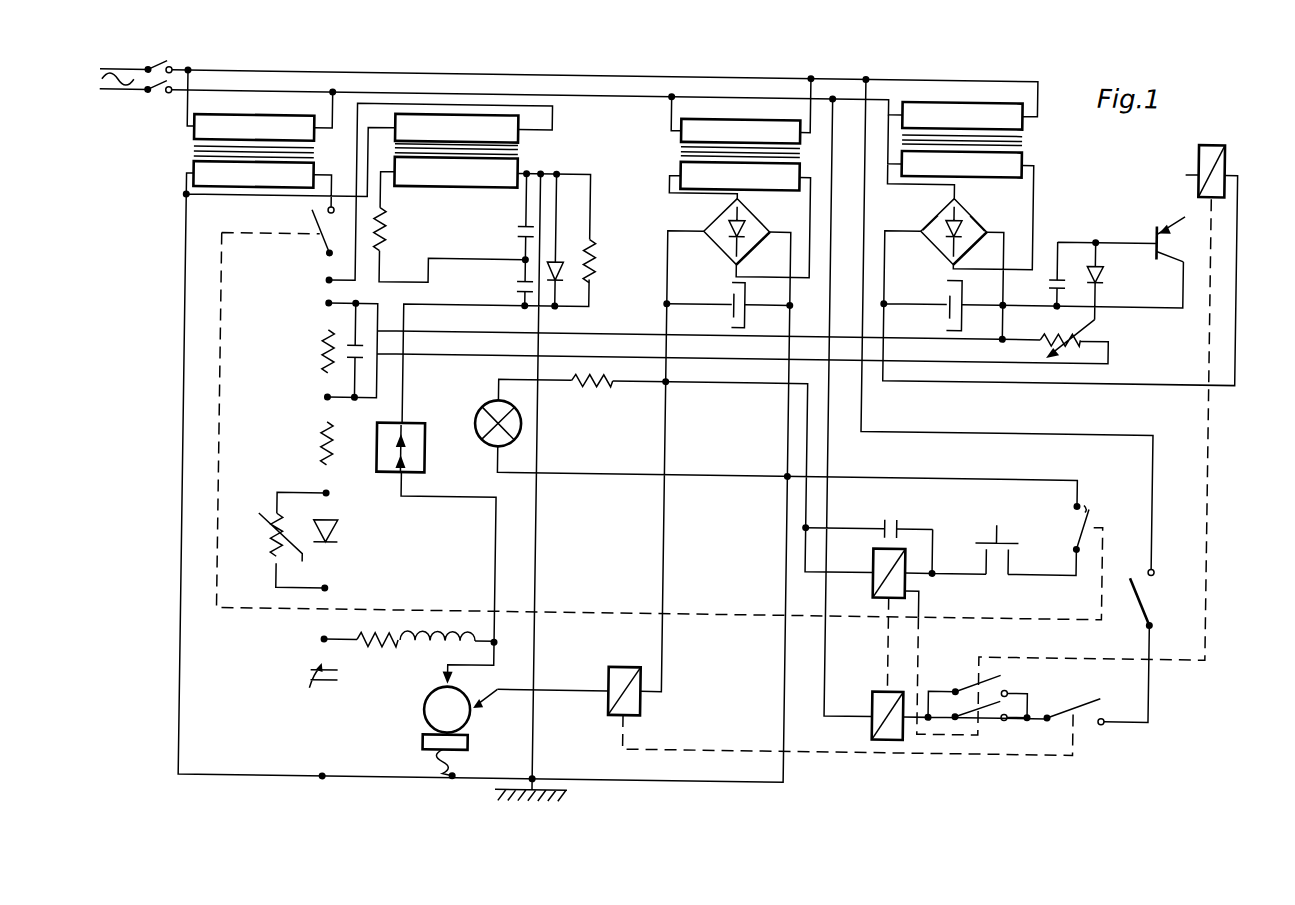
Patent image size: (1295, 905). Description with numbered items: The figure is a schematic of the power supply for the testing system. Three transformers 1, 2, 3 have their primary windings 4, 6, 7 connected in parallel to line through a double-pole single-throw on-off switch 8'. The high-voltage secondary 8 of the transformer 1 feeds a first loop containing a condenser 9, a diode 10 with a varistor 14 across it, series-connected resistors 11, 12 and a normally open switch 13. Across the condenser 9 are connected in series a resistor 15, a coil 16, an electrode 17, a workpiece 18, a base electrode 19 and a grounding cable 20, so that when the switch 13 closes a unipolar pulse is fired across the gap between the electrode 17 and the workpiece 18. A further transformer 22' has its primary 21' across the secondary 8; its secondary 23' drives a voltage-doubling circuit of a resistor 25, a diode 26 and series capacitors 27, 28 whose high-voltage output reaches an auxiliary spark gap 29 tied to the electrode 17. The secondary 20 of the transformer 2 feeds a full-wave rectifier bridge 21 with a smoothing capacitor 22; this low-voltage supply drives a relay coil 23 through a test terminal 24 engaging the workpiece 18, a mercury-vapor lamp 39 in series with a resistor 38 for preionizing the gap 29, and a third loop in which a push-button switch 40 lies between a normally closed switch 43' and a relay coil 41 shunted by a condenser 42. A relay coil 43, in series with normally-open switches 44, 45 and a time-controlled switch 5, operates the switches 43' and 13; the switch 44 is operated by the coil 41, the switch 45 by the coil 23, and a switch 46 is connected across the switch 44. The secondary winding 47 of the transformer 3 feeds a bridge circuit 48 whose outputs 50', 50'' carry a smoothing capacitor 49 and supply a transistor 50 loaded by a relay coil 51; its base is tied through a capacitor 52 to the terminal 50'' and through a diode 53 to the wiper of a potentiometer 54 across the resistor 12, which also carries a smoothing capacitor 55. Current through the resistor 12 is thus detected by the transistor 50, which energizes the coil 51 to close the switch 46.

The transformer 1 is at (186, 145).
The transformer 2 is at (679, 144).
The transformer 3 is at (1029, 128).
The primary winding 4 is at (254, 128).
The time-controlled switch 5 is at (1154, 595).
The primary winding 6 is at (740, 132).
The primary winding 7 is at (962, 116).
The high-voltage secondary 8 is at (253, 175).
The double-pole single-throw on-off switch 8' is at (143, 91).
The condenser 9 is at (313, 687).
The diode 10 is at (338, 531).
The resistor 11 is at (321, 446).
The resistor 12 is at (320, 349).
The normally open switch 13 is at (309, 242).
The varistor 14 is at (276, 542).
The resistor 15 is at (374, 633).
The coil 16 is at (420, 651).
The electrode 17 is at (468, 666).
The workpiece 18 is at (438, 704).
The base or contact electrode 19 is at (430, 739).
The grounding cable 20 is at (438, 758).
The full-wave rectifier bridge 21 is at (752, 228).
The primary 21' is at (456, 128).
The smoothing capacitor 22 is at (715, 310).
The transformer 22' is at (498, 139).
The relay coil 23 is at (623, 673).
The secondary 23' is at (455, 172).
The test terminal 24 is at (388, 237).
The resistor 25 is at (599, 252).
The diode 26 is at (559, 254).
The capacitor 27 is at (518, 228).
The capacitor 28 is at (518, 284).
The auxiliary spark gap 29 is at (431, 455).
The resistor 38 is at (592, 398).
The mercury-vapor lamp 39 is at (487, 406).
The momentary-contact push-button switch 40 is at (997, 533).
The relay coil 41 is at (884, 587).
The condenser 42 is at (896, 518).
The relay coil 43 is at (867, 719).
The normally closed switch 43' is at (1108, 517).
The normally-open switch 44 is at (985, 727).
The normally-open switch 45 is at (1076, 699).
The normally open switch 46 is at (985, 675).
The secondary winding 47 is at (962, 164).
The bridge circuit 48 is at (961, 202).
The smoothing capacitor 49 is at (947, 288).
The transistor 50 is at (1143, 234).
The output terminal 50' is at (917, 212).
The output terminal 50'' is at (1002, 213).
The relay coil 51 is at (1214, 131).
The capacitor 52 is at (1058, 264).
The diode 53 is at (1111, 266).
The potentiometer 54 is at (1094, 327).
The capacitor 55 is at (372, 342).